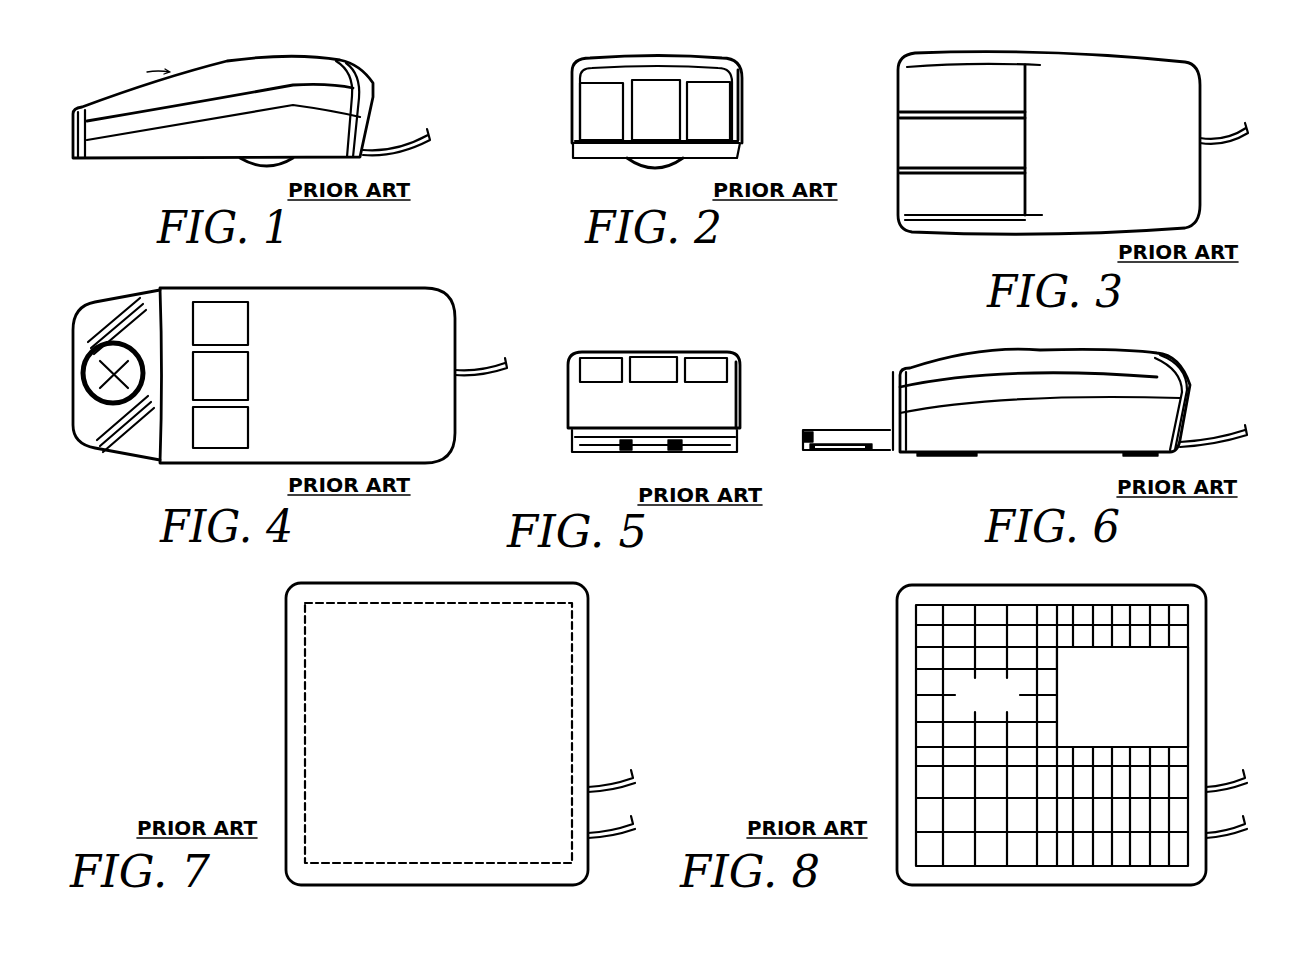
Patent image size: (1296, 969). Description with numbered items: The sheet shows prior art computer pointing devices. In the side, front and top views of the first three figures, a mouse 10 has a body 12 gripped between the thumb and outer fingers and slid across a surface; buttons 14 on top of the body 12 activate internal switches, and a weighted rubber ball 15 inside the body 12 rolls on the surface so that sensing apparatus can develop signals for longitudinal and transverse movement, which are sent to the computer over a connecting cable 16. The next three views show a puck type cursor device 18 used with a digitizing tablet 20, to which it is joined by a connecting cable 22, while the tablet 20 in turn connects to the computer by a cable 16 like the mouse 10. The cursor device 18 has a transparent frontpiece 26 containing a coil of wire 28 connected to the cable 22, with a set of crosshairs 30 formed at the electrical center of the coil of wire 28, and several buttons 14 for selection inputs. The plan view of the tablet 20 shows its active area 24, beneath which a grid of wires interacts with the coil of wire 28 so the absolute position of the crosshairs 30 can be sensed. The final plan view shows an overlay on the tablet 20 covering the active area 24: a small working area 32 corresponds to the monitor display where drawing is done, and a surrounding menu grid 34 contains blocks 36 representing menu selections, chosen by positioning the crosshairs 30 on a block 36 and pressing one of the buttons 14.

In FIG. 1, the mouse 10 is at (271, 119).
In FIG. 2, the mouse 10 is at (699, 119).
In FIG. 3, the mouse 10 is at (1079, 140).
In FIG. 1, the body 12 is at (337, 98).
In FIG. 2, the body 12 is at (740, 112).
In FIG. 3, the body 12 is at (1147, 98).
In FIG. 2, the buttons 14 is at (612, 118).
In FIG. 3, the buttons 14 is at (987, 188).
In FIG. 4, the buttons 14 is at (237, 427).
In FIG. 5, the buttons 14 is at (700, 365).
In FIG. 1, the weighted rubber ball 15 is at (267, 165).
In FIG. 2, the weighted rubber ball 15 is at (640, 167).
In FIG. 1, the connecting cable 16 is at (407, 157).
In FIG. 3, the connecting cable 16 is at (1213, 143).
In FIG. 7, the connecting cable 16 is at (593, 843).
In FIG. 8, the connecting cable 16 is at (1205, 843).
In FIG. 4, the cursor device 18 is at (293, 386).
In FIG. 5, the cursor device 18 is at (657, 400).
In FIG. 6, the cursor device 18 is at (1025, 411).
In FIG. 7, the tablet 20 is at (459, 734).
In FIG. 8, the tablet 20 is at (1034, 735).
In FIG. 4, the connecting cable 22 is at (483, 388).
In FIG. 6, the connecting cable 22 is at (1203, 443).
In FIG. 7, the connecting cable 22 is at (593, 783).
In FIG. 8, the connecting cable 22 is at (1203, 783).
In FIG. 7, the active area 24 is at (537, 678).
In FIG. 8, the active area 24 is at (1034, 734).
In FIG. 4, the transparent frontpiece 26 is at (131, 389).
In FIG. 5, the transparent frontpiece 26 is at (633, 462).
In FIG. 6, the transparent frontpiece 26 is at (846, 438).
In FIG. 4, the coil of wire 28 is at (90, 335).
In FIG. 5, the coil of wire 28 is at (643, 447).
In FIG. 6, the coil of wire 28 is at (830, 448).
In FIG. 4, the crosshairs 30 is at (125, 373).
In FIG. 8, the working area 32 is at (1170, 713).
In FIG. 8, the menu grid 34 is at (927, 678).
In FIG. 8, the blocks 36 is at (953, 780).